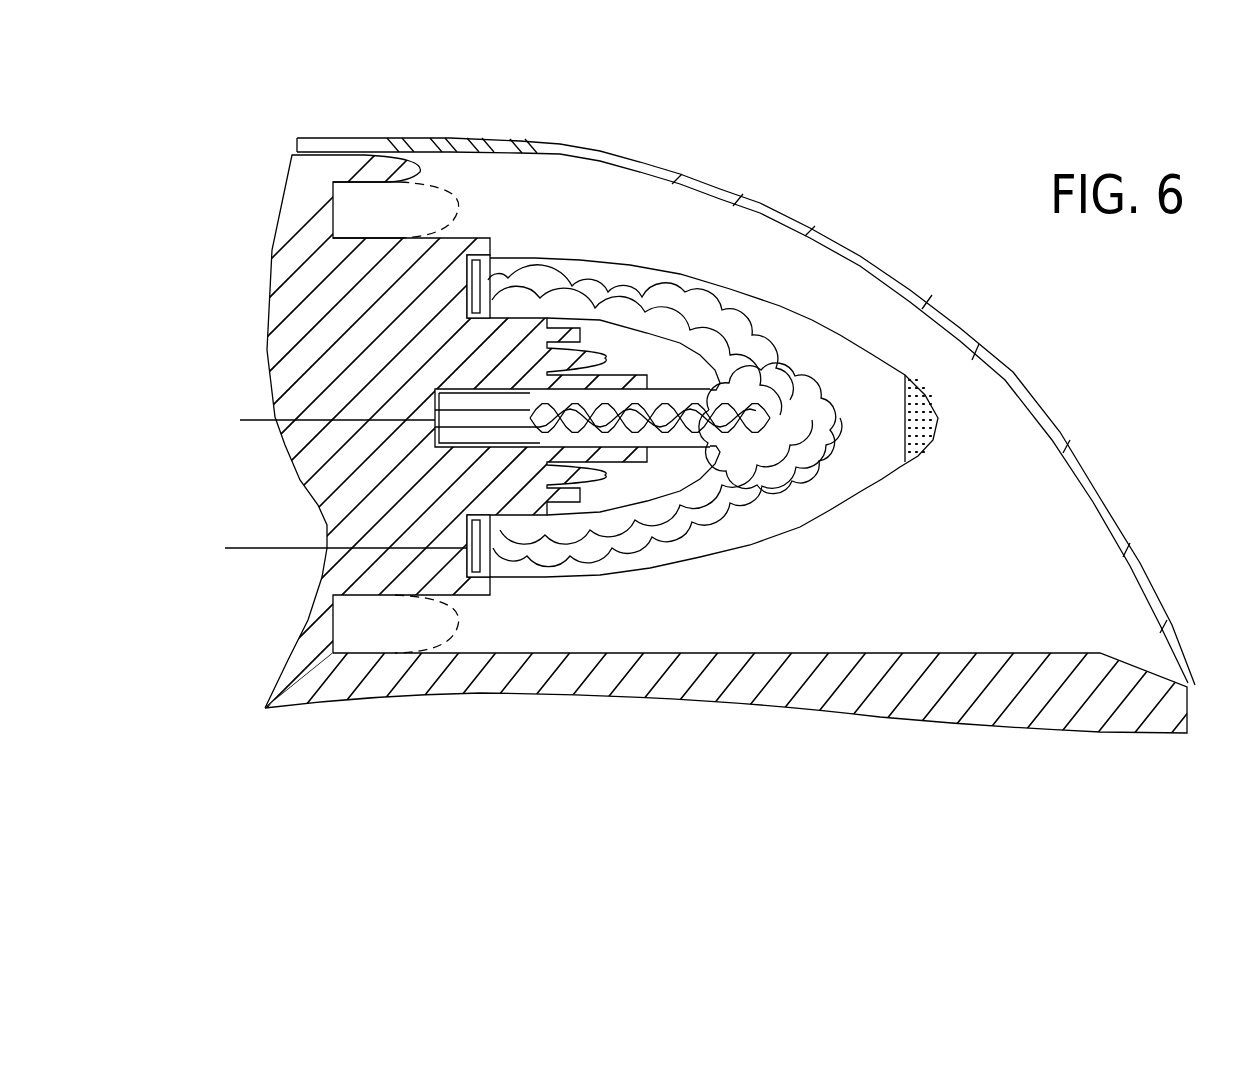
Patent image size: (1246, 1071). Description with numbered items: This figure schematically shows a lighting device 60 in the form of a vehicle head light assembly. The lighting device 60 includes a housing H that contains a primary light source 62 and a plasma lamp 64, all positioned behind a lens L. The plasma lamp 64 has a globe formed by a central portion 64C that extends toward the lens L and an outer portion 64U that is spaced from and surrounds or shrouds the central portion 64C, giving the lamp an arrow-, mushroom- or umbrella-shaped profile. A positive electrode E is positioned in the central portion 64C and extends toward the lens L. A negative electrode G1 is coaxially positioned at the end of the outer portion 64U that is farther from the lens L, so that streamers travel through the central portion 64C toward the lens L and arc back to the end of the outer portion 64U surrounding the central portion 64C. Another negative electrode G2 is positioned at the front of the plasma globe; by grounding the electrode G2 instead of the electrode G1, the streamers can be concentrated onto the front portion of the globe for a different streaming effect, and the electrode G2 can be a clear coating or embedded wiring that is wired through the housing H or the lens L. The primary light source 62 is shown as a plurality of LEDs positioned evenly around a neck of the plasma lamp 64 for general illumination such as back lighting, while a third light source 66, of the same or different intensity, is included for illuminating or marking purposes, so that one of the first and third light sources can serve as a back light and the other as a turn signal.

The lighting device 60 is at (770, 150).
The lens L is at (1013, 370).
The housing H is at (765, 676).
The third light source 66 is at (457, 200).
The negative electrode G1 is at (493, 557).
The negative electrode G2 is at (940, 432).
The positive electrode E is at (515, 403).
The primary light source 62 is at (673, 453).
The plasma lamp 64 is at (877, 450).
The central portion 64C is at (607, 490).
The outer portion 64U is at (873, 493).